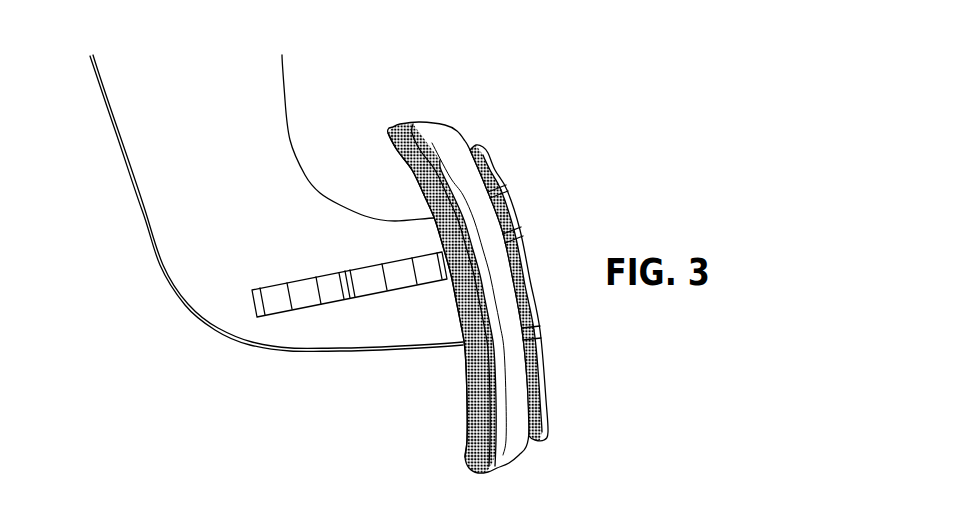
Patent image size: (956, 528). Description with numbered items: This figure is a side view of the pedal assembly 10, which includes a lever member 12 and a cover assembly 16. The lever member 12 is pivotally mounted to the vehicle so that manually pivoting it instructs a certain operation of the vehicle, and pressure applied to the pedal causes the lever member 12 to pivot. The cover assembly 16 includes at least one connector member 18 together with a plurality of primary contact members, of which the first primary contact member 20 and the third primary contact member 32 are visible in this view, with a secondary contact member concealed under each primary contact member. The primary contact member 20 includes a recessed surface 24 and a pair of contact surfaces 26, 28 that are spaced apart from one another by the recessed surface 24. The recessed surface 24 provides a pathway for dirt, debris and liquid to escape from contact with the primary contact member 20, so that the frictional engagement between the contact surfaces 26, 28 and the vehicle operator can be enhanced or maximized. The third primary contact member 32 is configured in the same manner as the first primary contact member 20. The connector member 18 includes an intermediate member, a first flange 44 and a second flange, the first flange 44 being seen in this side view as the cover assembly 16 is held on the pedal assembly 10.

The pedal assembly 10 is at (478, 79).
The lever member 12 is at (146, 220).
The cover assembly 16 is at (512, 126).
The connector member 18 is at (424, 298).
The first flange 44 is at (466, 431).
The primary contact member 20 is at (561, 293).
The contact surface 26 is at (527, 254).
The third primary contact member 32 is at (496, 168).
The recessed surface 24 is at (545, 329).
The contact surface 28 is at (548, 387).